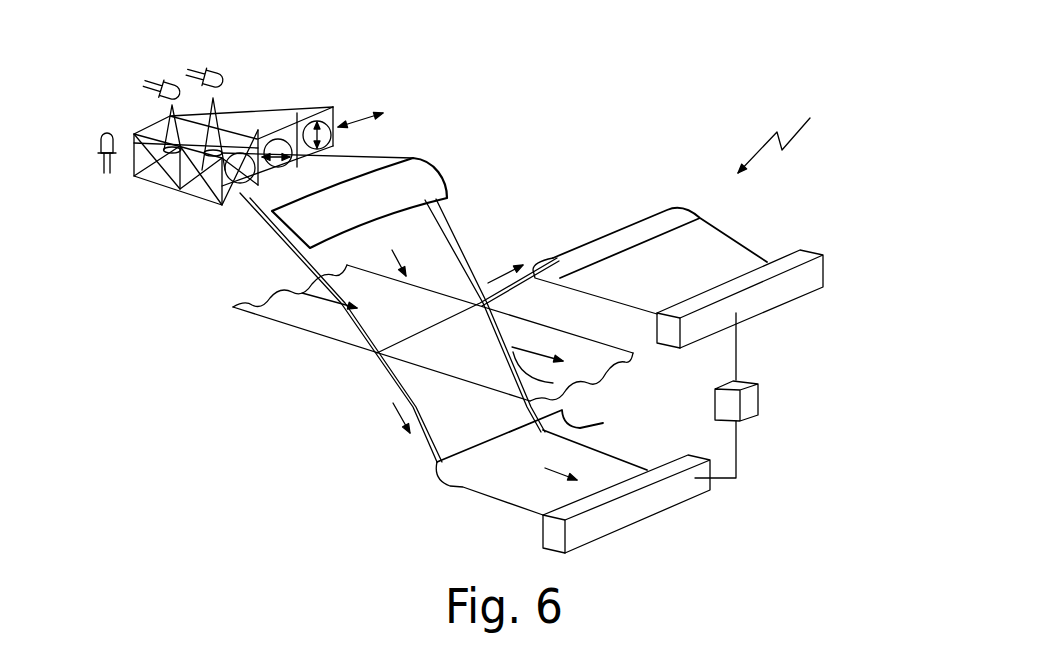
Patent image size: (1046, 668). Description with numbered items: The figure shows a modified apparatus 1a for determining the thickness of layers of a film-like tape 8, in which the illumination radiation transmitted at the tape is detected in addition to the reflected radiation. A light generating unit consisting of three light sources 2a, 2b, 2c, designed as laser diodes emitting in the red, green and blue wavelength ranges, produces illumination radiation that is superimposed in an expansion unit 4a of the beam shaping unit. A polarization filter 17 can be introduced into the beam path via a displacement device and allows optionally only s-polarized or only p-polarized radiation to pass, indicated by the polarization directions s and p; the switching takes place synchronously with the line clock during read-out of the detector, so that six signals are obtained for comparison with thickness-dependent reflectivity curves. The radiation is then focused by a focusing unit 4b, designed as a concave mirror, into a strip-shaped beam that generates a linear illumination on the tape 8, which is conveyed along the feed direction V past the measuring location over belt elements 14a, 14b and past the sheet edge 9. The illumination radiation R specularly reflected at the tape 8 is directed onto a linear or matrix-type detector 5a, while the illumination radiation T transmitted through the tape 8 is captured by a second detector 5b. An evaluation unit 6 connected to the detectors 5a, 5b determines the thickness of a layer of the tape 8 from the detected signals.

The apparatus 1a is at (783, 132).
The light source 2a is at (110, 132).
The light source 2b is at (170, 82).
The light source 2c is at (217, 70).
The expansion unit 4a is at (245, 122).
The focusing unit 4b is at (405, 172).
The detector 5a is at (792, 287).
The detector 5b is at (670, 495).
The evaluation unit 6 is at (758, 400).
The film-like tape 8 is at (300, 315).
The sheet edge 9 is at (532, 357).
The conveyor belt 14a is at (657, 225).
The conveyor belt 14b is at (440, 475).
The polarization filter 17 is at (333, 110).
The p-polarized illumination radiation p is at (277, 155).
The s-polarized illumination radiation s is at (315, 120).
The reflected illumination radiation R is at (504, 266).
The feed direction V is at (537, 344).
The transmitted illumination radiation T is at (394, 419).